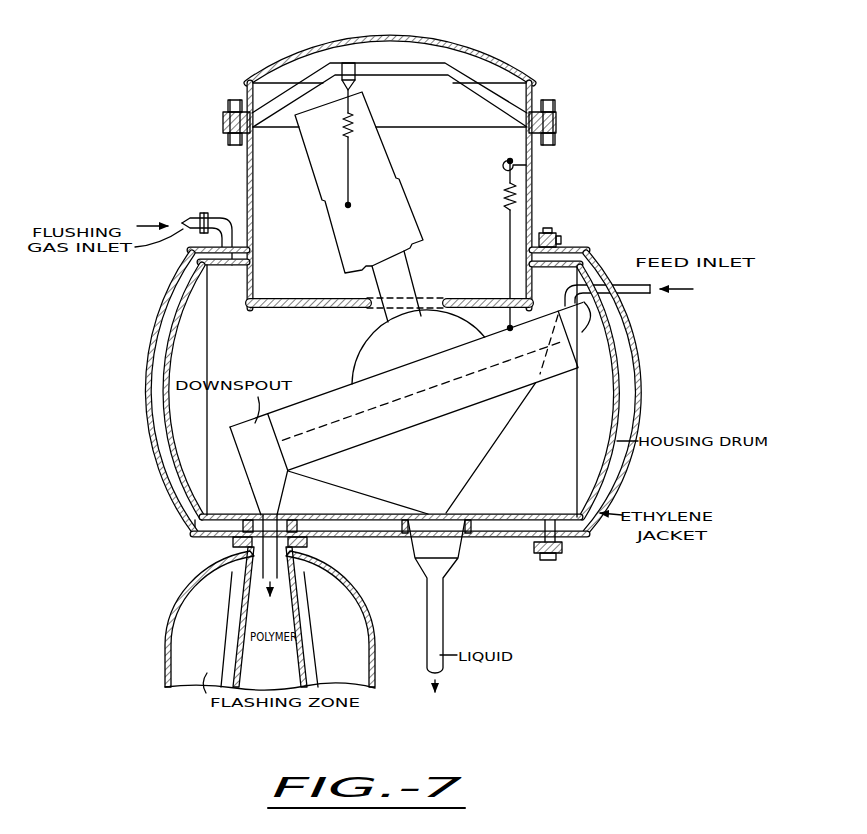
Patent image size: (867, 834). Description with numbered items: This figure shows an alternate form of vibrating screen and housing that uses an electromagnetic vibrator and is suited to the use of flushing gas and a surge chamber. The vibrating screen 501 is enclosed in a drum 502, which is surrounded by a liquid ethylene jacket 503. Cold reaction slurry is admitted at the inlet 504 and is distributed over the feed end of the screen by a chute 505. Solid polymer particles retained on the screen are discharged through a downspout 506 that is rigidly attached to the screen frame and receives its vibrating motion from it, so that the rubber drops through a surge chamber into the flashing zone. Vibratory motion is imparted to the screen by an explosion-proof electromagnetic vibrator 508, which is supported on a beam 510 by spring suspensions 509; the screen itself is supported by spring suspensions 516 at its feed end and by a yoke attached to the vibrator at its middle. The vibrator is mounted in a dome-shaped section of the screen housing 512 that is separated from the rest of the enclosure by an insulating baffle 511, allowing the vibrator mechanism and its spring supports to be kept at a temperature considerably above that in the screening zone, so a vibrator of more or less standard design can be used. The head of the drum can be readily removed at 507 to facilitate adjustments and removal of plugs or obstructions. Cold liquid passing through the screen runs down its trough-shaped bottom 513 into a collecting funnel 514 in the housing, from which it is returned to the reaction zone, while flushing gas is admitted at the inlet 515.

The vibrating screen 501 is at (340, 412).
The drum 502 is at (610, 411).
The liquid ethylene jacket 503 is at (620, 471).
The slurry inlet 504 is at (637, 297).
The chute 505 is at (590, 315).
The downspout 506 is at (233, 440).
The removable drum head 507 is at (556, 528).
The electromagnetic vibrator 508 is at (387, 147).
The spring suspensions 509 is at (352, 179).
The beam 510 is at (447, 65).
The insulating baffle 511 is at (440, 289).
The upper housing 512 is at (247, 167).
The trough-shaped bottom 513 is at (462, 470).
The collecting funnel 514 is at (445, 598).
The flushing gas inlet 515 is at (198, 216).
The spring suspensions 516 is at (505, 197).